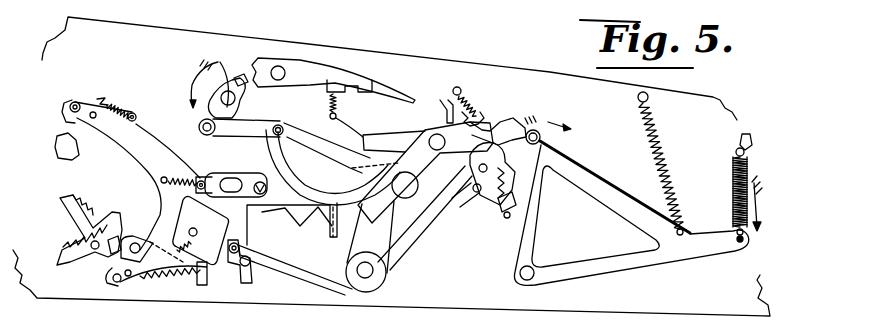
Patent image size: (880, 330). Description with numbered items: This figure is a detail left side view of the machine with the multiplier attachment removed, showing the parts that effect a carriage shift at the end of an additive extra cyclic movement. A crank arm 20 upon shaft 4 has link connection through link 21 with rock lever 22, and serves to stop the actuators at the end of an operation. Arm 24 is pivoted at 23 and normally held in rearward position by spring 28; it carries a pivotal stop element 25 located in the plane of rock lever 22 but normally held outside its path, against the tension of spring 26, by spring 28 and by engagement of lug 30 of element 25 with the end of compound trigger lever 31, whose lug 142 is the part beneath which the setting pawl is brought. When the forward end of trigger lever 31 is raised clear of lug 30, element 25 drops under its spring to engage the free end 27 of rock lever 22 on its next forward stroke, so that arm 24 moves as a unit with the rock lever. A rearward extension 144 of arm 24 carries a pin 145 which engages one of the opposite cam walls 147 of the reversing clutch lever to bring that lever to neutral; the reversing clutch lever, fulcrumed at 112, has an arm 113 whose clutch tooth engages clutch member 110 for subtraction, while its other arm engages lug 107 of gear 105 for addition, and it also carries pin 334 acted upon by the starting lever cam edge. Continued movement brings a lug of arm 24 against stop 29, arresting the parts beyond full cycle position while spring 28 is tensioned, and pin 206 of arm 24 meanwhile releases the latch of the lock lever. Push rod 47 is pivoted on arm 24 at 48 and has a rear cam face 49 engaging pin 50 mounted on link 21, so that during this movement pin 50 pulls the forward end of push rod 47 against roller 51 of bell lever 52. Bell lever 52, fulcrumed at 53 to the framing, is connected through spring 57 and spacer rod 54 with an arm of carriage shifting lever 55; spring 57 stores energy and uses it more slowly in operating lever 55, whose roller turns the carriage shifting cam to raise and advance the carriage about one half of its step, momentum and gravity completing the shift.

The shaft 4 is at (209, 77).
The crank arm 20 is at (212, 105).
The link 21 is at (303, 130).
The rock lever 22 is at (380, 240).
The pivot 23 is at (365, 275).
The arm 24 is at (420, 224).
The stop element 25 is at (377, 133).
The spring 26 is at (479, 194).
The free end of rock lever 27 is at (346, 115).
The spring 28 is at (466, 110).
The stop 29 is at (503, 210).
The lug 30 is at (445, 105).
The compound trigger lever 31 is at (395, 92).
The push rod 47 is at (490, 132).
The pivot 48 is at (434, 136).
The cam face 49 is at (276, 150).
The pin 50 is at (277, 127).
The roller 51 is at (546, 142).
The bell lever 52 is at (620, 200).
The fulcrum 53 is at (522, 278).
The spacer rod 54 is at (732, 150).
The carriage shifting lever 55 is at (749, 136).
The spring 57 is at (751, 186).
The gear 105 is at (85, 262).
The lug 107 is at (110, 241).
The clutch member 110 is at (80, 148).
The fulcrum 112 is at (220, 182).
The arm of reversing clutch lever 113 is at (76, 102).
The lug 142 is at (370, 88).
The rearward extension 144 is at (308, 272).
The pin 145 is at (246, 248).
The cam walls 147 is at (240, 262).
The pin 206 is at (496, 174).
The pin 334 is at (252, 283).